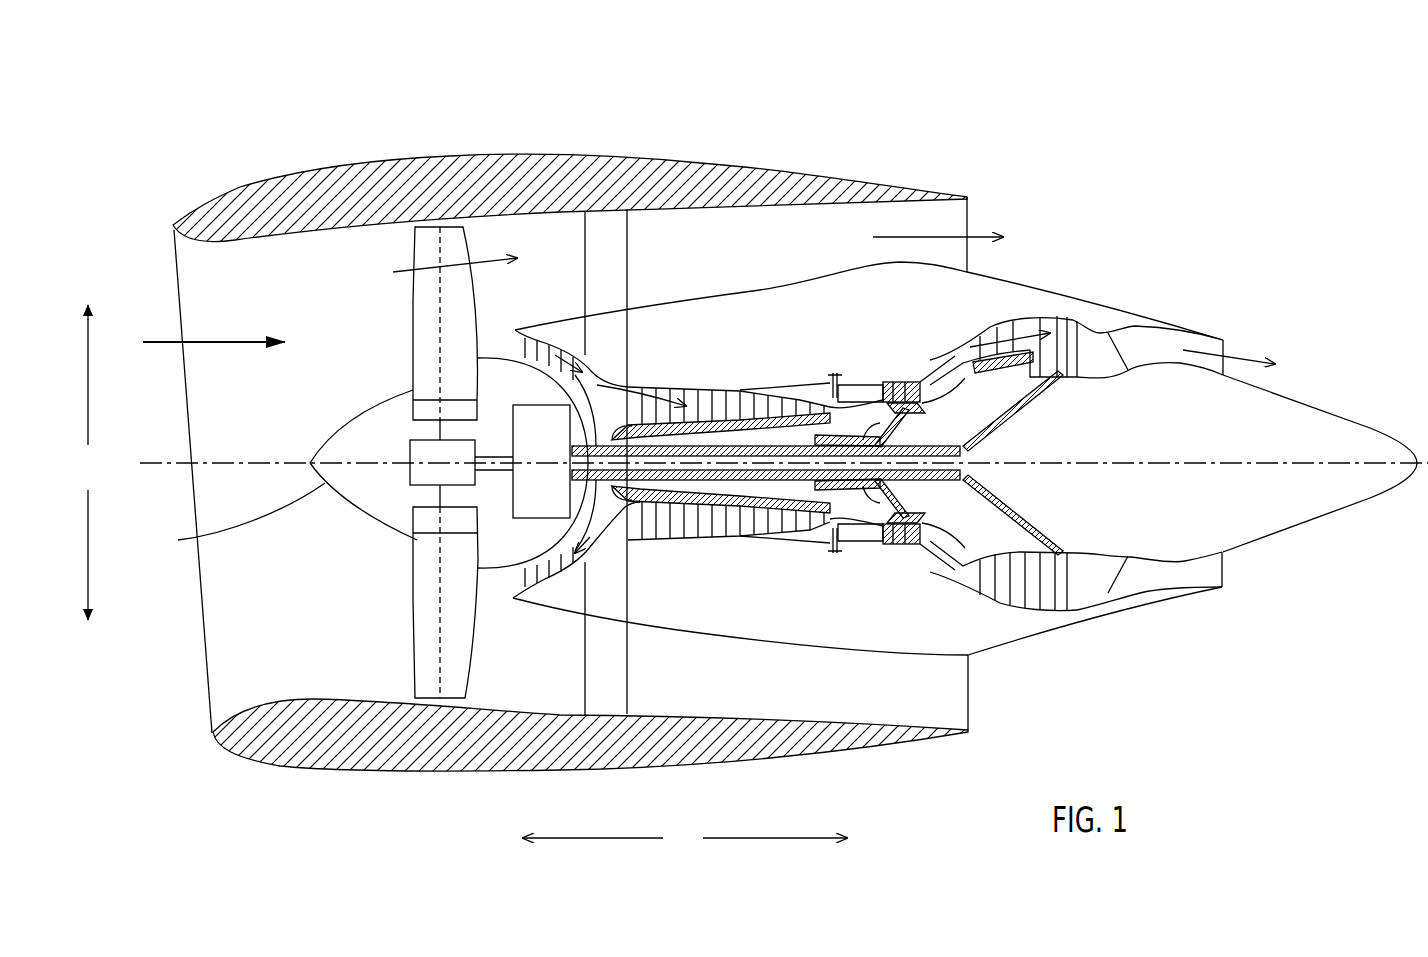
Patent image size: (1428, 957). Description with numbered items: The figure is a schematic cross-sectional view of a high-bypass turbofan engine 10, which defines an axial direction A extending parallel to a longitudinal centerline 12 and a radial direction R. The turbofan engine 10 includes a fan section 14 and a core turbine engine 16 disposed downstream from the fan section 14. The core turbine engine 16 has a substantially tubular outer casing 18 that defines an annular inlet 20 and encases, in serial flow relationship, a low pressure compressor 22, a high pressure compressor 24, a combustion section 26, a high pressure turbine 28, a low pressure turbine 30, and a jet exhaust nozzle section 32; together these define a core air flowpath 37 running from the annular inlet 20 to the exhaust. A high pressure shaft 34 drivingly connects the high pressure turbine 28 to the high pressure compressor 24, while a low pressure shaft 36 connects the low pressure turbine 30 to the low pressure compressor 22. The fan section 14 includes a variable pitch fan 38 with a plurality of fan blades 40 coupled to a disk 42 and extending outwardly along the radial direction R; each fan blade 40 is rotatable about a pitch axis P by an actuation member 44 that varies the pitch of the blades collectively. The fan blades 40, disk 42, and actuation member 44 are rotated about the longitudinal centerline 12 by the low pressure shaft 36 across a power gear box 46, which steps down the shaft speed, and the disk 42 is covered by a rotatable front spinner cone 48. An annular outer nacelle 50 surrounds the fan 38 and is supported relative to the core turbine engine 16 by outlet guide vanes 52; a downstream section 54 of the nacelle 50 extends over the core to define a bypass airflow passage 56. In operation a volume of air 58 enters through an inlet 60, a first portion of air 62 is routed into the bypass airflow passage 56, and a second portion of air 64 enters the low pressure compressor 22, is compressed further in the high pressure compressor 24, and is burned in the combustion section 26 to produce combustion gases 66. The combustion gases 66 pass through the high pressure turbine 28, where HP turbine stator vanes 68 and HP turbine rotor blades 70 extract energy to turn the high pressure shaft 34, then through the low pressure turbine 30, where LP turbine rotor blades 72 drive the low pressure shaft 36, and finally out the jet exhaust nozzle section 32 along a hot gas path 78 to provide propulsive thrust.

The turbofan engine 10 is at (1128, 165).
The longitudinal centerline 12 is at (1367, 463).
The fan section 14 is at (443, 123).
The core turbine engine 16 is at (821, 337).
The outer casing 18 is at (807, 652).
The annular inlet 20 is at (528, 586).
The low pressure compressor 22 is at (580, 531).
The high pressure compressor 24 is at (657, 533).
The combustion section 26 is at (853, 555).
The high pressure turbine 28 is at (925, 543).
The low pressure turbine 30 is at (1062, 607).
The jet exhaust nozzle section 32 is at (1133, 590).
The high pressure shaft 34 is at (900, 416).
The low pressure shaft 36 is at (962, 440).
The core air flowpath 37 is at (607, 532).
The variable pitch fan 38 is at (372, 643).
The fan blades 40 is at (410, 632).
The disk 42 is at (430, 413).
The actuation member 44 is at (407, 443).
The power gear box 46 is at (563, 413).
The front spinner cone 48 is at (280, 474).
The outer nacelle 50 is at (462, 772).
The outlet guide vanes 52 is at (630, 248).
The downstream section of the nacelle 54 is at (900, 192).
The bypass airflow passage 56 is at (797, 254).
The volume of air 58 is at (210, 340).
The inlet 60 is at (207, 688).
The first portion of air 62 is at (423, 268).
The second portion of air 64 is at (500, 340).
The combustion gases 66 is at (1013, 330).
The HP turbine stator vanes 68 is at (880, 545).
The HP turbine rotor blades 70 is at (893, 520).
The LP turbine rotor blades 72 is at (972, 588).
The hot gas path 78 is at (960, 356).
The pitch axis P is at (446, 248).
The radial direction R is at (88, 462).
The axial direction A is at (685, 838).